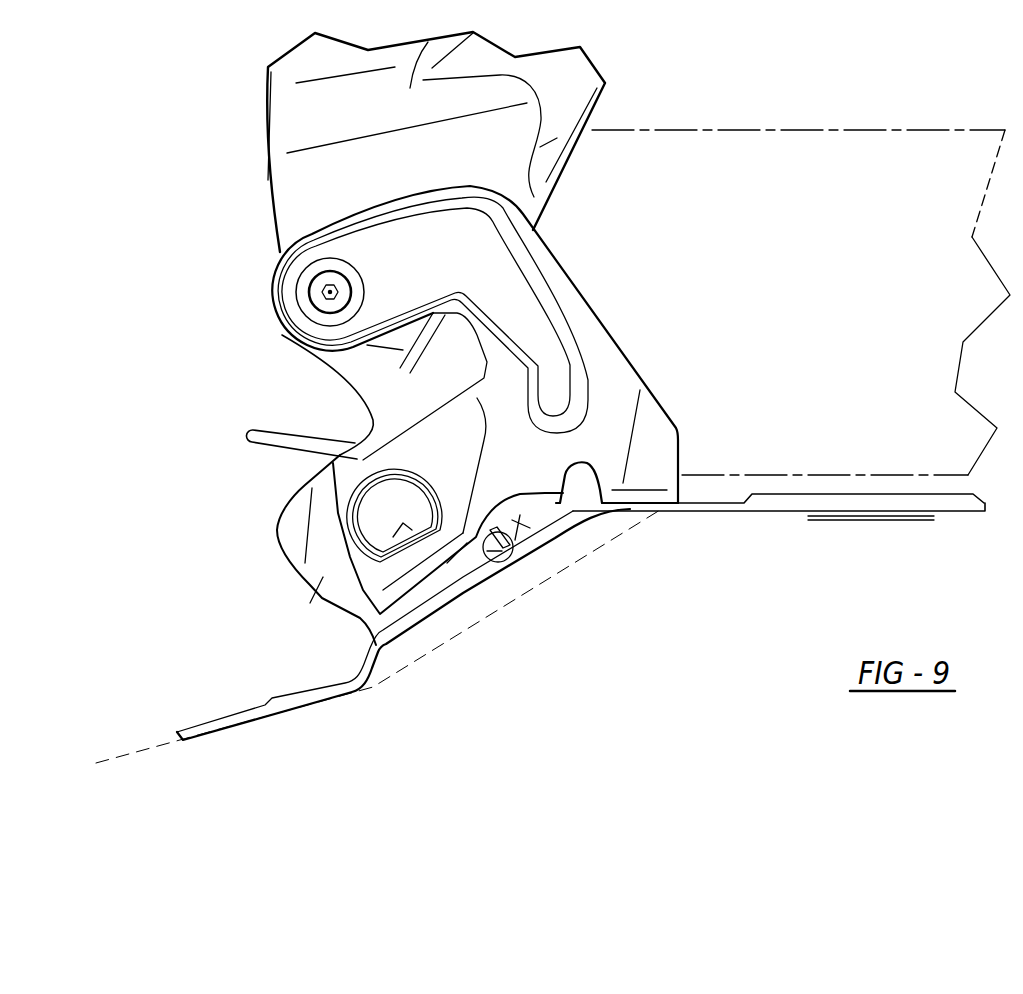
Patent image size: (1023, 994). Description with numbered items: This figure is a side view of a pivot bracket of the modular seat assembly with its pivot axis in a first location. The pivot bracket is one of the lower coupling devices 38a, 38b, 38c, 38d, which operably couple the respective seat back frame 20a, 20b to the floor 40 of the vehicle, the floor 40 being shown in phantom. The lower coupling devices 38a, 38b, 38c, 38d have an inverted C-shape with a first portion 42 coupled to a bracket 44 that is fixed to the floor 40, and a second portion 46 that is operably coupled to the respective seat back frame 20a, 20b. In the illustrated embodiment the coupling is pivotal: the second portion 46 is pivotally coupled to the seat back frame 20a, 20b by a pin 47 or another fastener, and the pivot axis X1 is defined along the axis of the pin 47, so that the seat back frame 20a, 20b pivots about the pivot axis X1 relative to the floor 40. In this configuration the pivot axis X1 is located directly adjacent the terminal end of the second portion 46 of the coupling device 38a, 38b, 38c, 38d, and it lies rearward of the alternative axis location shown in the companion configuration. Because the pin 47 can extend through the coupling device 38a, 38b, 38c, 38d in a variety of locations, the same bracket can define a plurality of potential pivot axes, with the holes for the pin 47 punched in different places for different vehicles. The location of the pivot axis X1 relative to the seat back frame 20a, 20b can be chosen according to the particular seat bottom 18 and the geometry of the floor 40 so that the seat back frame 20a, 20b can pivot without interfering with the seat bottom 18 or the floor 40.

The seat bottom 18 is at (913, 131).
The seat back frame 20a is at (506, 140).
The seat back frame 20b is at (570, 96).
The lower coupling device 38a is at (508, 345).
The lower coupling device 38b is at (508, 345).
The lower coupling device 38c is at (508, 345).
The lower coupling device 38d is at (508, 345).
The floor 40 is at (130, 753).
The first portion 42 is at (415, 442).
The bracket 44 is at (321, 598).
The second portion 46 is at (388, 261).
The pin 47 is at (311, 279).
The pivot axis X1 is at (264, 299).